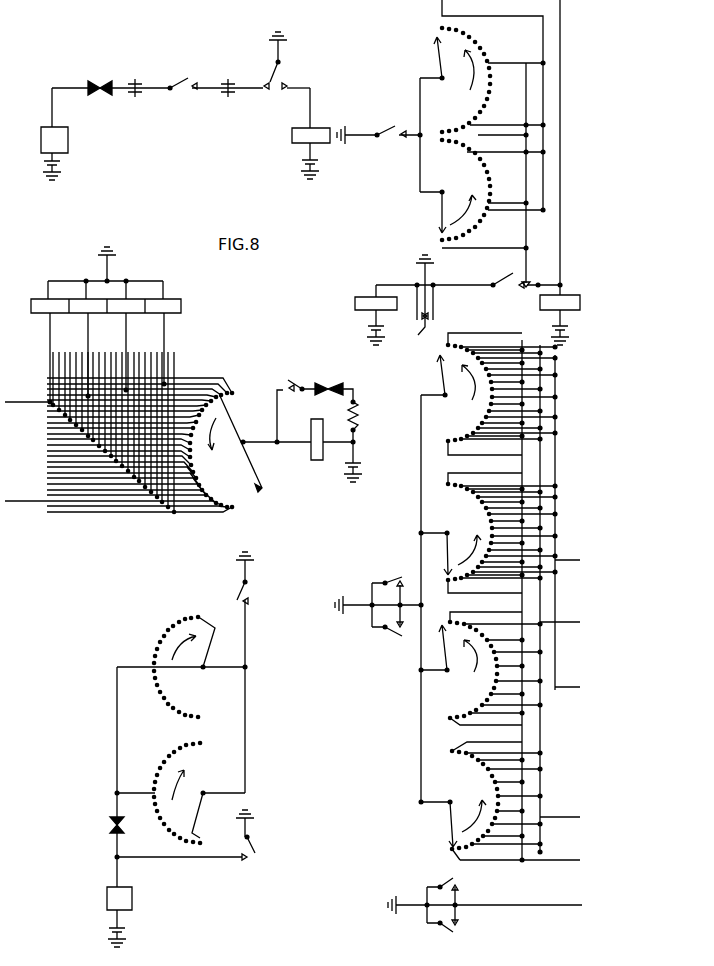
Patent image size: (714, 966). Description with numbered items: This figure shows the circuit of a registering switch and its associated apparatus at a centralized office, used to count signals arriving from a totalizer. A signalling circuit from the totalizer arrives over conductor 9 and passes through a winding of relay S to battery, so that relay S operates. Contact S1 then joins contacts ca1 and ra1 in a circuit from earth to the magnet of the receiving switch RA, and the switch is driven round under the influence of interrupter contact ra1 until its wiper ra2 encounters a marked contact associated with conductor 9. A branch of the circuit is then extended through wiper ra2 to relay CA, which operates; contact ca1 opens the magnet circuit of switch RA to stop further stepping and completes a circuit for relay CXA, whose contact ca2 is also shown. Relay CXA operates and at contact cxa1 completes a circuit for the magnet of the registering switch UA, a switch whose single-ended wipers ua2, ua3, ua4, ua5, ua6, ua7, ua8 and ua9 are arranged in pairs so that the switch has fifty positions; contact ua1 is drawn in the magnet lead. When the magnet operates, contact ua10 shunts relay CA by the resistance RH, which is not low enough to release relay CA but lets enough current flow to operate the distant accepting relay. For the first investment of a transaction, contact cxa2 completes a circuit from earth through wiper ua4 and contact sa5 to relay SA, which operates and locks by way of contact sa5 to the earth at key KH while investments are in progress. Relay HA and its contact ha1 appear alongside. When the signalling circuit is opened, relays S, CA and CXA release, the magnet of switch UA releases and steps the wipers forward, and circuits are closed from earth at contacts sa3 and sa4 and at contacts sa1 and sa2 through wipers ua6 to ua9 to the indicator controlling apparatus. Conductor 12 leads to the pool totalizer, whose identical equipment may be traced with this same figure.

The interrupter contact of receiving switch RA ra1 is at (111, 78).
The contact of relay S S1 is at (209, 97).
The contact of relay CA ca1 is at (294, 60).
The receiving switch RA is at (100, 138).
The relay CXA is at (290, 139).
The relay S is at (212, 304).
The conductor 9 is at (27, 393).
The conductor 12 is at (26, 492).
The wiper of receiving switch RA ra2 is at (154, 445).
The contact of relay CA ca2 is at (279, 400).
The contact of registering switch UA ua10 is at (339, 378).
The resistance RH is at (365, 442).
The relay CA is at (327, 485).
The wiper of registering switch UA ua5 is at (490, 142).
The wiper of registering switch UA ua4 is at (481, 194).
The contact of relay CXA cxa2 is at (378, 145).
The contact of relay SA sa5 is at (496, 271).
The relay HA is at (347, 304).
The key KH is at (419, 295).
The relay SA is at (535, 304).
The wiper of registering switch UA ua9 is at (488, 567).
The wiper of registering switch UA ua8 is at (488, 533).
The contact of relay SA sa1 is at (378, 589).
The contact of relay SA sa2 is at (384, 642).
The wiper of registering switch UA ua7 is at (480, 668).
The wiper of registering switch UA ua6 is at (480, 801).
The contact of relay SA sa3 is at (485, 897).
The contact of relay SA sa4 is at (463, 920).
The contact of relay HA ha1 is at (263, 672).
The wiper of registering switch UA ua3 is at (181, 737).
The wiper of registering switch UA ua2 is at (181, 793).
The contact of registering switch UA ua1 is at (97, 823).
The contact of relay CXA cxa1 is at (196, 849).
The registering switch UA is at (165, 902).